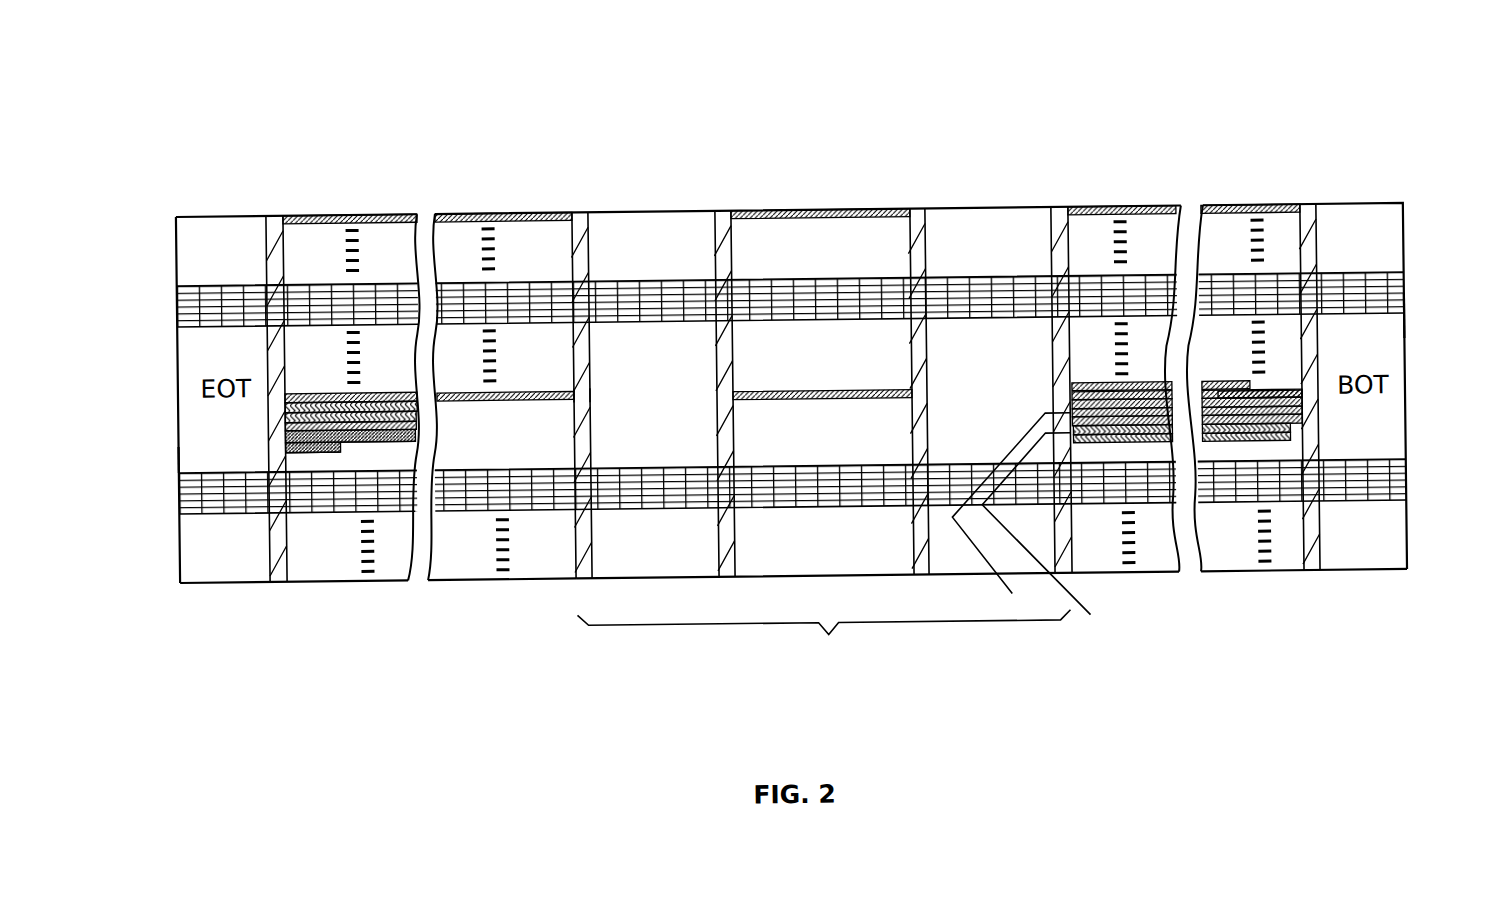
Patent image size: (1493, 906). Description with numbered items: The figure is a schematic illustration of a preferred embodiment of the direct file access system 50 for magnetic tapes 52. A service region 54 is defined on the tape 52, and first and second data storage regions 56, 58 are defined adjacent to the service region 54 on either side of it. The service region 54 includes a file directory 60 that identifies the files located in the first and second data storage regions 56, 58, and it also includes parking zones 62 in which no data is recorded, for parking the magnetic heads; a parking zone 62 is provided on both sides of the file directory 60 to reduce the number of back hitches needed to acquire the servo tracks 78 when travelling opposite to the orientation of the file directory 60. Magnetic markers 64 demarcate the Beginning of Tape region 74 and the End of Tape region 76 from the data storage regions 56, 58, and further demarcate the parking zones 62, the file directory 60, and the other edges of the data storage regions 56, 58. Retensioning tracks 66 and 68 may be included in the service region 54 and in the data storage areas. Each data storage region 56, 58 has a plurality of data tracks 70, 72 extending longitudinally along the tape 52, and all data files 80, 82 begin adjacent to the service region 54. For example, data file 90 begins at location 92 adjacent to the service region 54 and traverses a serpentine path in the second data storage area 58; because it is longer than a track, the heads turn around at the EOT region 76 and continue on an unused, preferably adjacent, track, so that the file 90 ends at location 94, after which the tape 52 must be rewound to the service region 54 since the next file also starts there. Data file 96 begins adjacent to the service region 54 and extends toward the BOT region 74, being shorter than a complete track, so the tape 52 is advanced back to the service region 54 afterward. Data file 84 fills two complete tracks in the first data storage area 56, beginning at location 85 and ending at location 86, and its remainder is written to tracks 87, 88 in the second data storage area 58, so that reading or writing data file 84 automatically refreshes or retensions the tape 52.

The direct file access system 50 is at (1164, 70).
The magnetic tape 52 is at (210, 562).
The service region 54 is at (825, 644).
The first data storage region 56 is at (1208, 593).
The second data storage region 58 is at (457, 591).
The file directory 60 is at (756, 383).
The parking zone 62 is at (644, 210).
The magnetic markers 64 is at (275, 210).
The retensioning track 66 is at (810, 210).
The retensioning track 68 is at (329, 210).
The data track 70 is at (1260, 232).
The data track 72 is at (359, 231).
The Beginning of Tape (BOT) region 74 is at (1392, 330).
The End of Tape (EOT) region 76 is at (191, 455).
The servo tracks 78 is at (178, 286).
The data file 80 is at (1290, 383).
The data file 82 is at (297, 386).
The data file 84 is at (285, 437).
The beginning location of data file 84 85 is at (1052, 537).
The ending location of data file 84 86 is at (1011, 514).
The data track 87 is at (383, 437).
The data track 88 is at (325, 447).
The data file 90 is at (512, 385).
The beginning location of data file 90 92 is at (579, 394).
The ending location of data file 90 94 is at (288, 409).
The data file 96 is at (1098, 382).